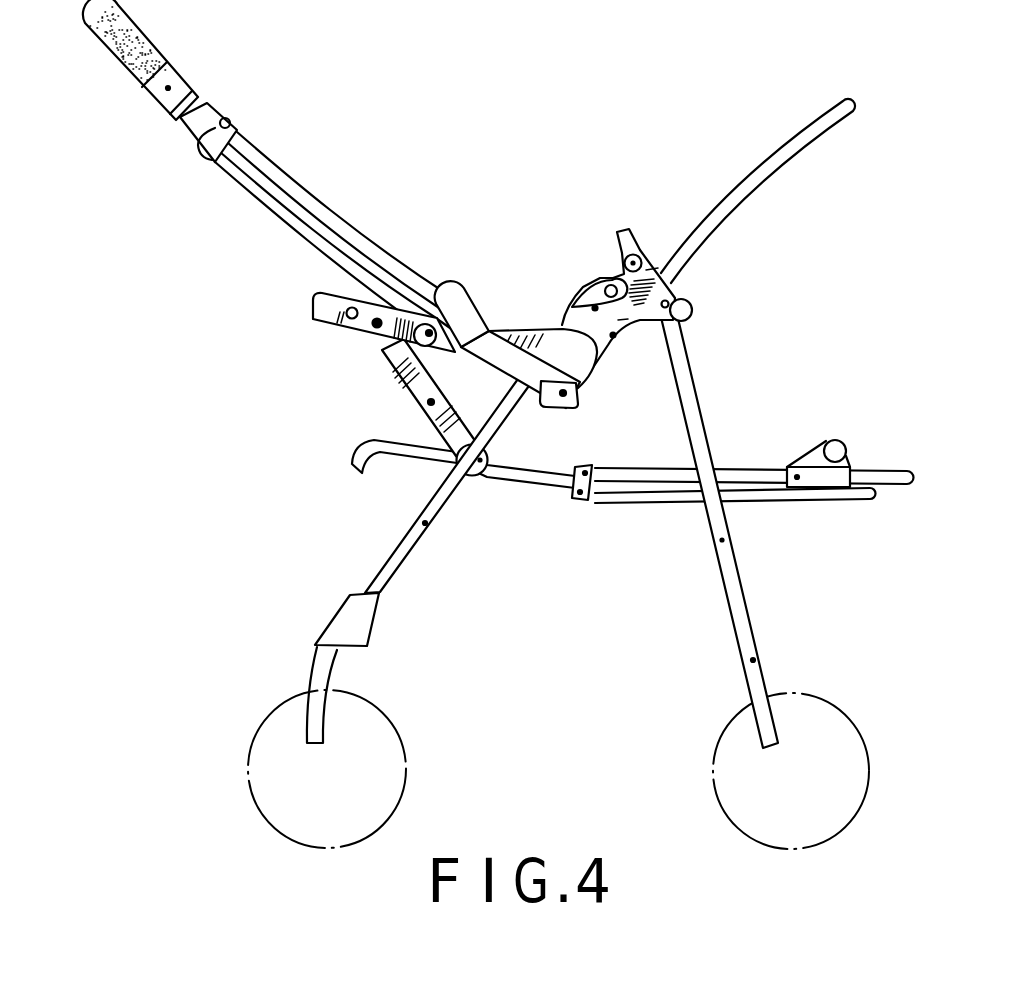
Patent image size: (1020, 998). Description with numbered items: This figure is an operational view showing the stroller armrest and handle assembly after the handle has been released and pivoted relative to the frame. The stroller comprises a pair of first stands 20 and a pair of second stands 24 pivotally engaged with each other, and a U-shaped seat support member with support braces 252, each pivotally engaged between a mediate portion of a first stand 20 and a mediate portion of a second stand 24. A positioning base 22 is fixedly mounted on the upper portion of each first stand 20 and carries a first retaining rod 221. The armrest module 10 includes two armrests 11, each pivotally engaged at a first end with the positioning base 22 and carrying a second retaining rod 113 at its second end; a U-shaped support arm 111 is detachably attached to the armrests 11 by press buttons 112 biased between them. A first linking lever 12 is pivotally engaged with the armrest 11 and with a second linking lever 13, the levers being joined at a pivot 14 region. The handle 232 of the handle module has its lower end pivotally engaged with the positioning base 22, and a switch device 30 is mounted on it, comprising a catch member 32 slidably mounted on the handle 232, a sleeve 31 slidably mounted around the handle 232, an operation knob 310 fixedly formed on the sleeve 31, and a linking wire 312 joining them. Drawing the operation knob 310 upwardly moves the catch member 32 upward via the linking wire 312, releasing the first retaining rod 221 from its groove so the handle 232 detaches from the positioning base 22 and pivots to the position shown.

The armrest module 10 is at (399, 314).
The armrest 11 is at (349, 296).
The support arm 111 is at (316, 316).
The press button 112 is at (354, 307).
The second retaining rod 113 is at (470, 308).
The first linking lever 12 is at (432, 397).
The second linking lever 13 is at (452, 423).
The pivot sleeve 14 is at (483, 486).
The first stand 20 is at (403, 557).
The positioning base 22 is at (708, 244).
The first retaining rod 221 is at (663, 300).
The second stand 24 is at (748, 618).
The support brace 252 is at (647, 506).
The switch device 30 is at (331, 207).
The sleeve 31 is at (182, 121).
The operation knob 310 is at (185, 149).
The linking wire 312 is at (285, 178).
The handle 232 is at (272, 208).
The catch member 32 is at (451, 290).